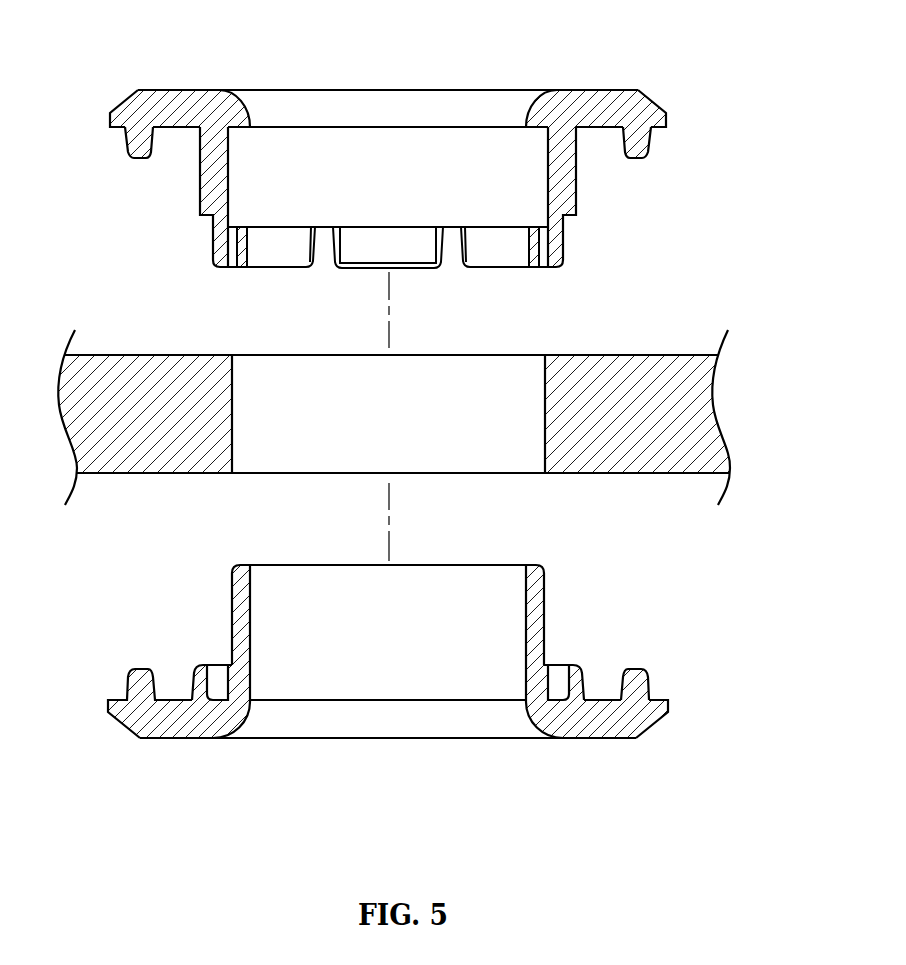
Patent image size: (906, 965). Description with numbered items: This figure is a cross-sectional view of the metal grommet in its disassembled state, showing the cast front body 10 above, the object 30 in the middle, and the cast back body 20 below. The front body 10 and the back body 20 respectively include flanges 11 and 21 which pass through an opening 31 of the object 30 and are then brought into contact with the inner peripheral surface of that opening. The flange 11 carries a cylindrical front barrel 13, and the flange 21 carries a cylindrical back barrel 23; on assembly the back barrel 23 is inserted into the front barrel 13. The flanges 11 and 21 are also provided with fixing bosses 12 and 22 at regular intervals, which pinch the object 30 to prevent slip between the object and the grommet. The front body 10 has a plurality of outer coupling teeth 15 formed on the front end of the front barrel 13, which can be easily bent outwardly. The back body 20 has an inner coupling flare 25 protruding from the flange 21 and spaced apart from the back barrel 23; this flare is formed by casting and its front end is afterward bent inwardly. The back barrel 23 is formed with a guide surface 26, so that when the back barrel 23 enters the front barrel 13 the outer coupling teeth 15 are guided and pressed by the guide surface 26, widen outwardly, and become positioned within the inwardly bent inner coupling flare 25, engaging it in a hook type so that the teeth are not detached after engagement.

The front body 10 is at (425, 145).
The flange 11 is at (593, 132).
The fixing bosses 12 is at (642, 142).
The front barrel 13 is at (547, 167).
The outer coupling teeth 15 is at (557, 240).
The back body 20 is at (440, 695).
The flange 21 is at (591, 700).
The fixing bosses 22 is at (640, 677).
The back barrel 23 is at (532, 605).
The inner coupling flare 25 is at (572, 673).
The guide surface 26 is at (233, 680).
The object 30 is at (392, 450).
The opening 31 is at (280, 442).